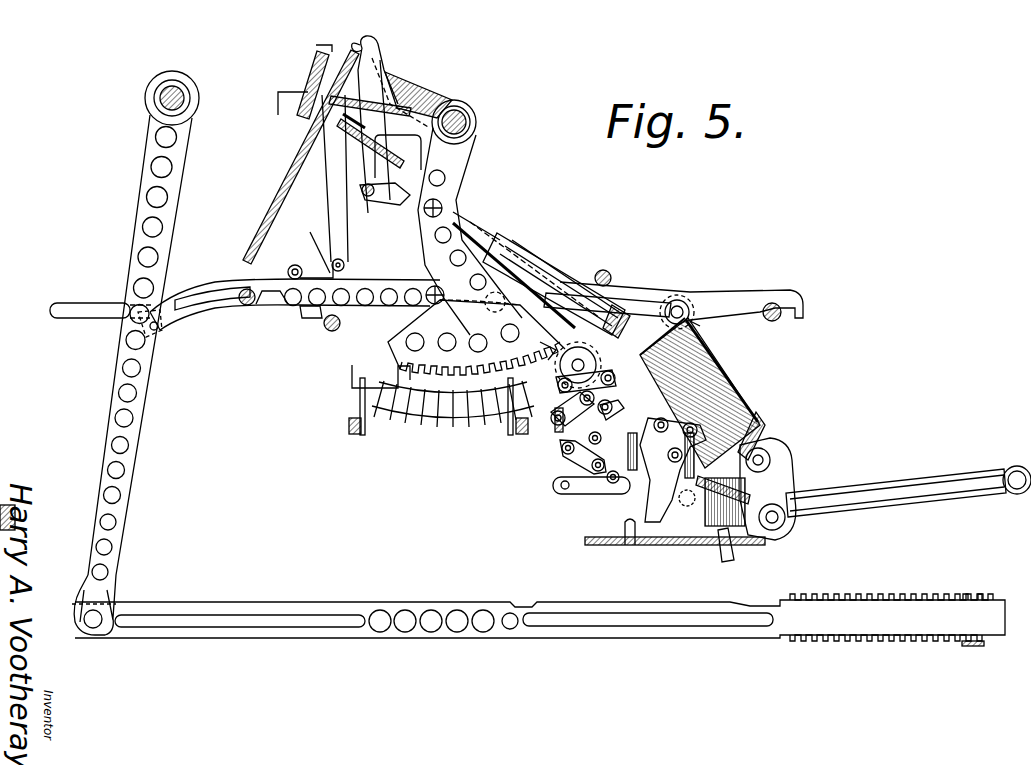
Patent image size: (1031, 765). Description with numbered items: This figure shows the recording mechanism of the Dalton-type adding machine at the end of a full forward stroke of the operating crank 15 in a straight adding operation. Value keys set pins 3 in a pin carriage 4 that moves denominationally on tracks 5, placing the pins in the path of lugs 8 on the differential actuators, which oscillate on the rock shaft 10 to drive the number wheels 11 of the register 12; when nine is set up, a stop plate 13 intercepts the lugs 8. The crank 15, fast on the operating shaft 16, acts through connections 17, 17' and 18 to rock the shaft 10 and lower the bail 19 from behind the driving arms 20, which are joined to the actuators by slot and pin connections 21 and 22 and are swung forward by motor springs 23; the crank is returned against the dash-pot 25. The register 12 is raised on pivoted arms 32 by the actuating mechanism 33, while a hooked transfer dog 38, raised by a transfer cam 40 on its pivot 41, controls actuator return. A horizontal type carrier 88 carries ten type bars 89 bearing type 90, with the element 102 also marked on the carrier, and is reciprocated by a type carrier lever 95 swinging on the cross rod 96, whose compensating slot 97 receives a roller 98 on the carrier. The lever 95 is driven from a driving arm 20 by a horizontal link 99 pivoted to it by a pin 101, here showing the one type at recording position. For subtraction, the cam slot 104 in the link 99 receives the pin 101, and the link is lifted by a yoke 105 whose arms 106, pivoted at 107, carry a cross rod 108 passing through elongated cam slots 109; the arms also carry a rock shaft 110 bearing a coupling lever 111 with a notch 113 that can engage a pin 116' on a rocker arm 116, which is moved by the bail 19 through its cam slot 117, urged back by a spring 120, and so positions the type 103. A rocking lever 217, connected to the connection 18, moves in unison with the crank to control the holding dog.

The pins 3 is at (428, 432).
The pin carriage 4 is at (364, 436).
The tracks 5 is at (348, 426).
The lugs 8 is at (396, 370).
The rock shaft 10 is at (459, 115).
The number wheels 11 is at (542, 352).
The register 12 is at (560, 380).
The stop plate 13 is at (497, 335).
The operating crank 15 is at (960, 477).
The operating shaft 16 is at (665, 546).
The connection 17 is at (777, 496).
The connection 17' is at (763, 424).
The connection 18 is at (680, 352).
The actuator releasing and returning bail 19 is at (366, 200).
The actuator driving arms 20 is at (382, 58).
The slot and pin connection 21 is at (540, 265).
The slot and pin connection 22 is at (478, 308).
The motor springs 23 is at (272, 200).
The dash-pot 25 is at (706, 376).
The pivoted arms 32 is at (679, 298).
The actuating mechanism part 33 is at (556, 480).
The hooked transfer dog 38 is at (617, 302).
The transfer cam 40 is at (556, 422).
The pivot 41 is at (692, 318).
The type carrier 88 is at (355, 600).
The type bars 89 is at (980, 597).
The type 90 is at (990, 645).
The type carrier lever 95 is at (141, 216).
The cross rod 96 is at (176, 92).
The compensating slot 97 is at (96, 636).
The roller 98 is at (104, 614).
The horizontal link 99 is at (205, 290).
The pin 101 is at (125, 318).
The upper teeth 102 is at (940, 595).
The type 103 is at (942, 642).
The cam slot 104 is at (156, 332).
The yoke 105 is at (282, 308).
The yoke arms 106 is at (312, 320).
The pivot 107 is at (341, 323).
The cross rod 108 is at (246, 306).
The elongated cam slots 109 is at (203, 310).
The horizontal rock shaft 110 is at (288, 272).
The coupling lever 111 is at (300, 275).
The notch 113 is at (318, 252).
The rocker arms 116 is at (319, 178).
The pins 116' is at (367, 266).
The cam slots 117 is at (418, 96).
The springs 120 is at (316, 76).
The rocking lever 217 is at (790, 292).